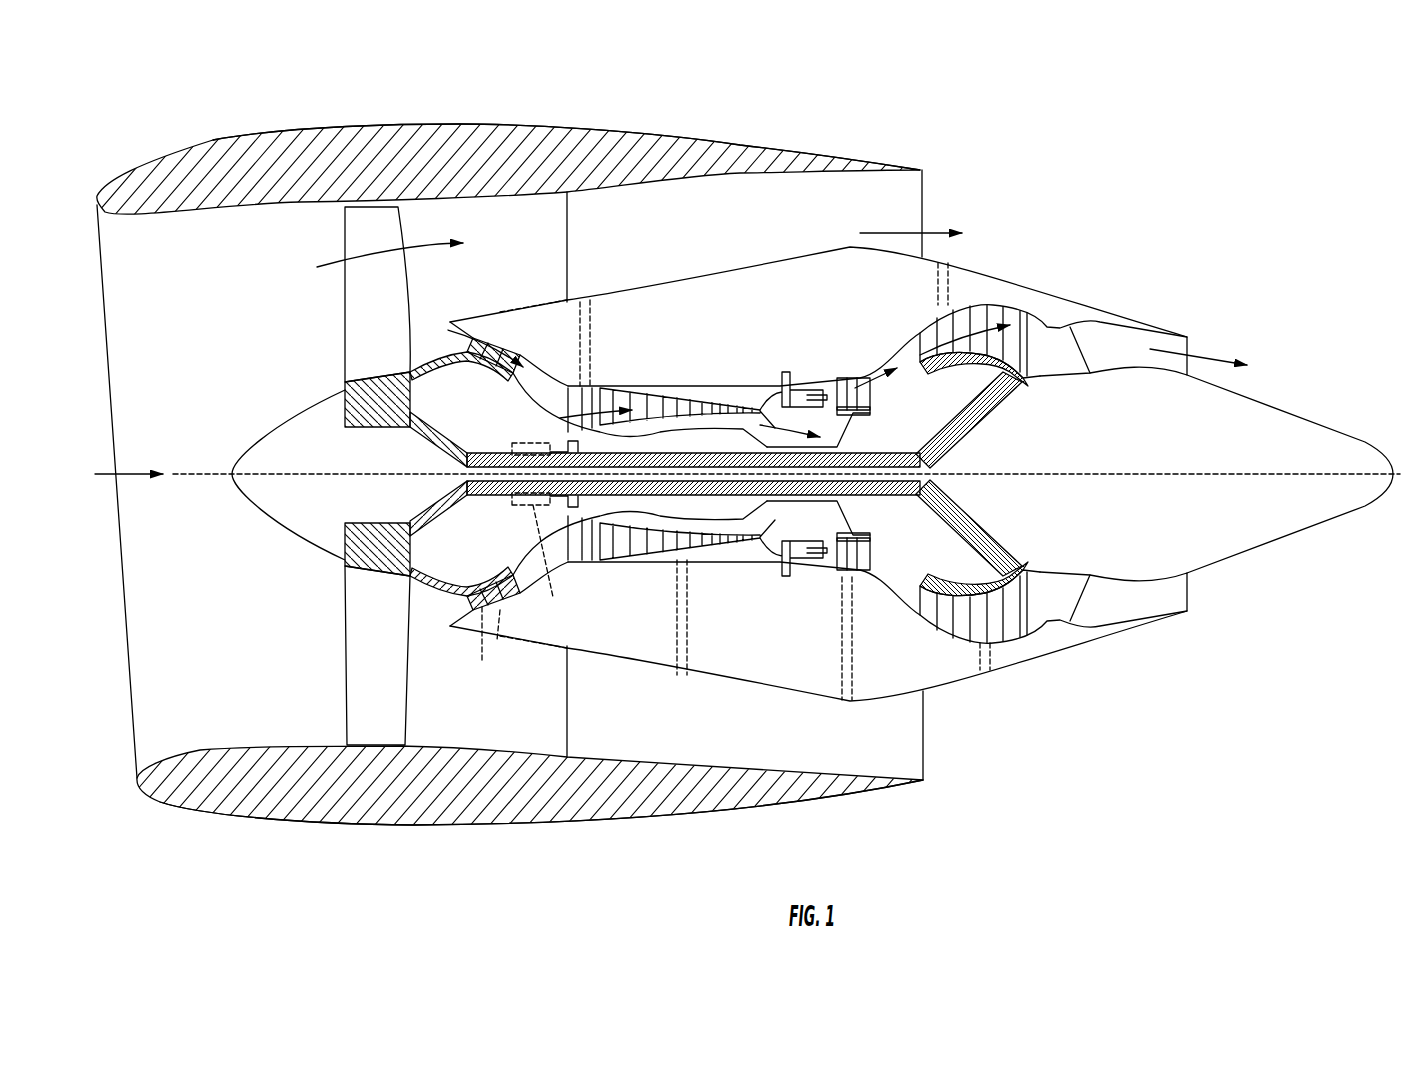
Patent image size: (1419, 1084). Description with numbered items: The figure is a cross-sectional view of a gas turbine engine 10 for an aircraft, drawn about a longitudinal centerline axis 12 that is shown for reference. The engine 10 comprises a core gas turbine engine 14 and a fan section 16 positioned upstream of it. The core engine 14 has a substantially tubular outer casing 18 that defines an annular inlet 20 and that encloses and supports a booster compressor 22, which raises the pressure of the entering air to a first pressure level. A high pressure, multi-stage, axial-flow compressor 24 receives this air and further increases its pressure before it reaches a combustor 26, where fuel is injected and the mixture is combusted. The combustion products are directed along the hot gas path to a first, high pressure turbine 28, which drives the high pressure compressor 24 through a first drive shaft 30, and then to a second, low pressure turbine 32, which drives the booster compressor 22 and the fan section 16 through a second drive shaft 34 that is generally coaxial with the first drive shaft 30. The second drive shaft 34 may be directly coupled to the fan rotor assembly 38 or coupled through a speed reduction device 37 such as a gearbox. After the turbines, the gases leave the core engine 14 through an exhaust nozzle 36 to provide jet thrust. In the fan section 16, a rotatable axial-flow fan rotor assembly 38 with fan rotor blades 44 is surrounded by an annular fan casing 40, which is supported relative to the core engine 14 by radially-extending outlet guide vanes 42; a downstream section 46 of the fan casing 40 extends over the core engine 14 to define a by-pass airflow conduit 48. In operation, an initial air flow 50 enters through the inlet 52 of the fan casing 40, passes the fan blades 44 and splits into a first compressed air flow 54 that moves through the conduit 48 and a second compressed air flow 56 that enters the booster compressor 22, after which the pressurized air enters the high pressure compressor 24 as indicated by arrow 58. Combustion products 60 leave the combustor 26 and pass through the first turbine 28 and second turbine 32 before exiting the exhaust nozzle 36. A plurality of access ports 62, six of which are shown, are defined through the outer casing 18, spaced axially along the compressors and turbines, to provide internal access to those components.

The gas turbine engine 10 is at (1091, 132).
The centerline axis 12 is at (1120, 472).
The core gas turbine engine 14 is at (770, 326).
The fan section 16 is at (391, 111).
The outer casing 18 is at (745, 688).
The annular inlet 20 is at (466, 612).
The booster compressor 22 is at (518, 578).
The high pressure compressor 24 is at (604, 555).
The combustor 26 is at (805, 555).
The first turbine 28 is at (873, 563).
The first drive shaft 30 is at (825, 440).
The second turbine 32 is at (1020, 638).
The second drive shaft 34 is at (546, 444).
The exhaust nozzle 36 is at (1180, 340).
The speed reduction device 37 is at (545, 564).
The fan rotor assembly 38 is at (405, 437).
The fan casing 40 is at (390, 822).
The outlet guide vanes 42 is at (568, 222).
The fan rotor blades 44 is at (340, 680).
The downstream section 46 is at (800, 148).
The by-pass airflow conduit 48 is at (699, 224).
The initial air flow 50 is at (130, 472).
The inlet 52 is at (130, 740).
The first compressed air flow 54 is at (863, 228).
The second compressed air flow 56 is at (433, 335).
The air flow into high pressure compressor 58 is at (596, 395).
The combustion products 60 is at (856, 372).
The access ports 62 is at (592, 330).